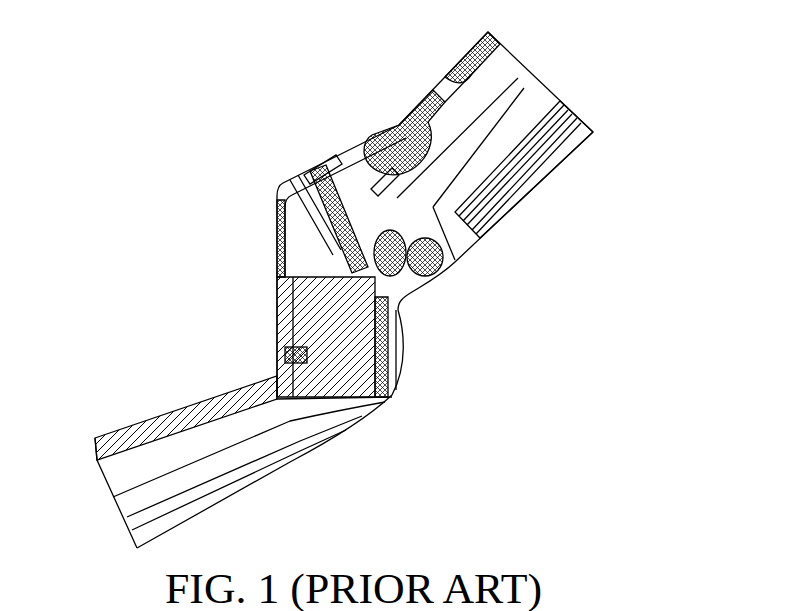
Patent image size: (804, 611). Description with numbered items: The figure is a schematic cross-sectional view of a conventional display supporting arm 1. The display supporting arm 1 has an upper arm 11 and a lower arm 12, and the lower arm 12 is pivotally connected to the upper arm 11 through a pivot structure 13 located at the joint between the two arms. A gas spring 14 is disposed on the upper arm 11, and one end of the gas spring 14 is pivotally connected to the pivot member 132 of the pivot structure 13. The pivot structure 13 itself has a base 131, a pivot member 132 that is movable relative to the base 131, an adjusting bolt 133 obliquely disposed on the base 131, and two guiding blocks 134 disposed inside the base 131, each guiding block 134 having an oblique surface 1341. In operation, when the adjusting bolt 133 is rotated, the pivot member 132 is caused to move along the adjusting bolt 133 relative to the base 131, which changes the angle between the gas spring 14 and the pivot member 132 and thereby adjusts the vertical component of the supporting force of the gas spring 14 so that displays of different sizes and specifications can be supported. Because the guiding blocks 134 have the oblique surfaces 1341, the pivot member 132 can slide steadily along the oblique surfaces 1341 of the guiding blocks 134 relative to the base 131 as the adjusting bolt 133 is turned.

The display supporting arm 1 is at (72, 47).
The upper arm 11 is at (456, 66).
The lower arm 12 is at (138, 421).
The pivot structure 13 is at (205, 271).
The base 131 is at (337, 145).
The pivot member 132 is at (322, 258).
The adjusting bolt 133 is at (291, 178).
The guiding block 134 is at (279, 209).
The oblique surface 1341 is at (288, 178).
The gas spring 14 is at (533, 175).